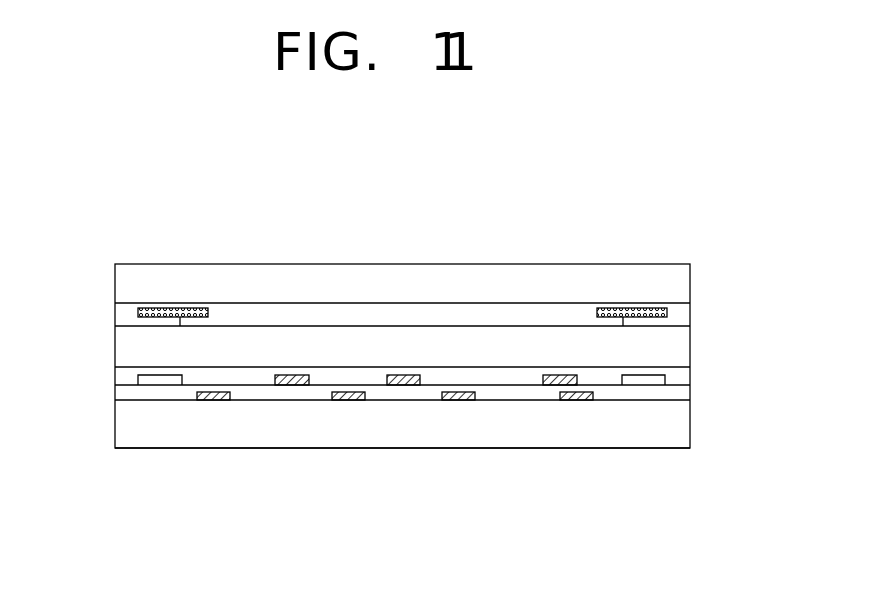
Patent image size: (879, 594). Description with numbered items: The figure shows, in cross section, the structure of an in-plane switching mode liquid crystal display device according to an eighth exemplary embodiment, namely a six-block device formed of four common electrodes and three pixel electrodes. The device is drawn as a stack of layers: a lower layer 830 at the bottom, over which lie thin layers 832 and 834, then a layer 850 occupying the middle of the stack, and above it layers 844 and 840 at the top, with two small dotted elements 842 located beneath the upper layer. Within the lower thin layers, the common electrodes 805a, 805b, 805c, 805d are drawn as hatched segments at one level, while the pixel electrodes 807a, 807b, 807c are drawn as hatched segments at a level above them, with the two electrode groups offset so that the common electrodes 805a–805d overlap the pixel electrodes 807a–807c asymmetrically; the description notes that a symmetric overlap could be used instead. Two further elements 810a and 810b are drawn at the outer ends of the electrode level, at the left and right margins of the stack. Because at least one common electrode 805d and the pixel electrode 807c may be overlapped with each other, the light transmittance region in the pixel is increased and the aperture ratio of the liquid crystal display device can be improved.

The upper substrate 840 is at (351, 290).
The spacer 842 is at (168, 303).
The upper electrode layer 844 is at (469, 313).
The liquid crystal layer 850 is at (676, 342).
The insulating layer 834 is at (680, 373).
The insulating layer 832 is at (692, 393).
The lower substrate 830 is at (125, 419).
The electrode 810a is at (140, 379).
The electrode 810b is at (658, 386).
The common electrode 805a is at (205, 400).
The common electrode 805b is at (345, 401).
The common electrode 805c is at (452, 401).
The common electrode 805d is at (601, 465).
The pixel electrode 807a is at (286, 386).
The pixel electrode 807b is at (400, 386).
The pixel electrode 807c is at (545, 386).